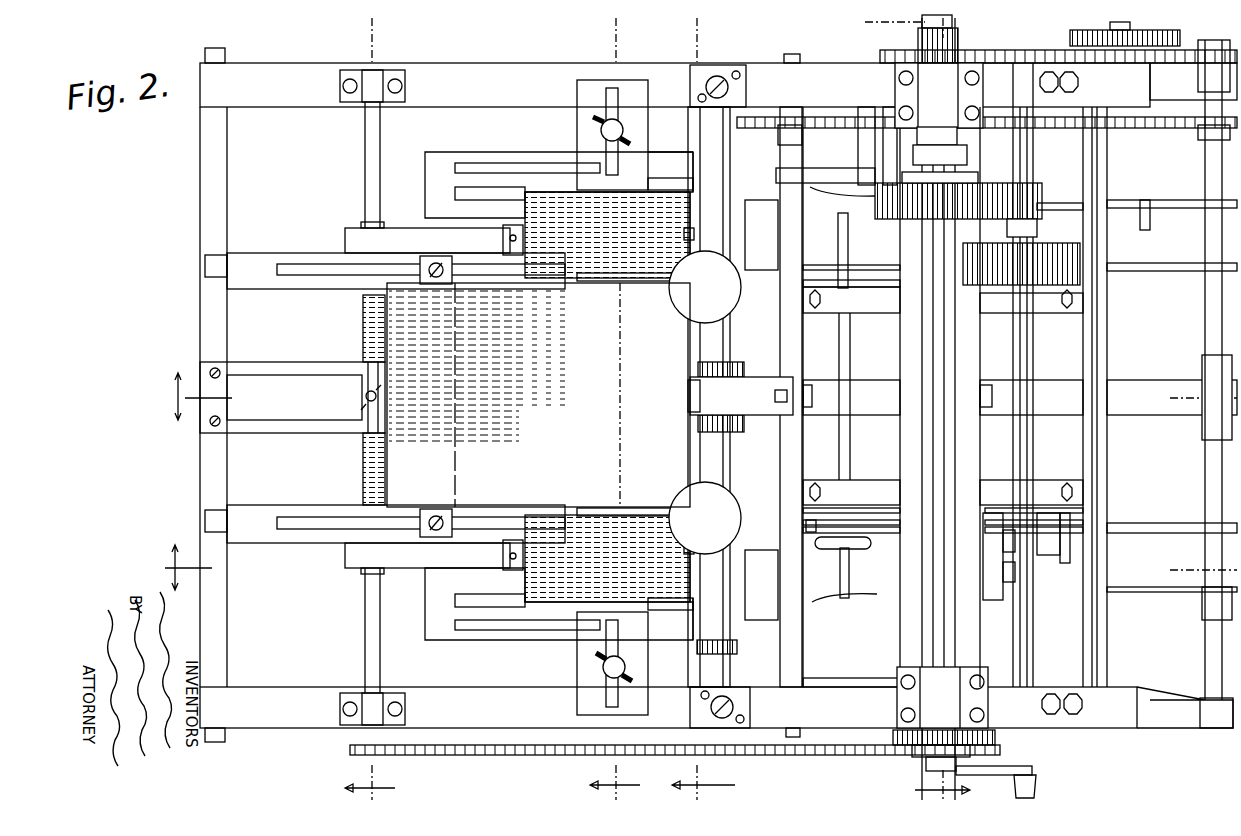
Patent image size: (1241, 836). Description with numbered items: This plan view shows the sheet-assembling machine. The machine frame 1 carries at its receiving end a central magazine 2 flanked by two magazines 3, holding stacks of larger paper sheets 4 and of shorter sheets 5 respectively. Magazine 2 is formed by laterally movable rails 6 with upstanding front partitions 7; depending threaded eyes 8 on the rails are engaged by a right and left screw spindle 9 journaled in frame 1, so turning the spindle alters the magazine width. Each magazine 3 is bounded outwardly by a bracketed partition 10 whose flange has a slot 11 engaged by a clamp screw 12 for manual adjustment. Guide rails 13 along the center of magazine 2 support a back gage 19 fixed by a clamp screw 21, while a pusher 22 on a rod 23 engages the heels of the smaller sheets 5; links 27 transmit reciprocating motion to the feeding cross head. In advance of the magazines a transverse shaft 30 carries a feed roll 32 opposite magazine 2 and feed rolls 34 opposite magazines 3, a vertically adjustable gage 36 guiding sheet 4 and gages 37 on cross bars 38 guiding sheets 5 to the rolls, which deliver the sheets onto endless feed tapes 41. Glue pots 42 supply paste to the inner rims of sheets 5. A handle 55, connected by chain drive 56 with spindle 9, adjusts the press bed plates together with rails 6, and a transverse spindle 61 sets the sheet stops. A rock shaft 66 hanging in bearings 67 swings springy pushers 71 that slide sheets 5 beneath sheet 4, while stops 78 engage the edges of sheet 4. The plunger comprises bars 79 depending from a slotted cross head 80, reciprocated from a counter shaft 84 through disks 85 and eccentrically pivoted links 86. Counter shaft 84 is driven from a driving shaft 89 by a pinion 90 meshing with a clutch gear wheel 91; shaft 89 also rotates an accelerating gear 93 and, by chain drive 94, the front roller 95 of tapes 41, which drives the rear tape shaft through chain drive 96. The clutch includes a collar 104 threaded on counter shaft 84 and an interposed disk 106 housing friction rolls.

The machine frame 1 is at (318, 72).
The central magazine 2 is at (538, 395).
The flanking magazine 3 is at (653, 397).
The larger paper sheet 4 is at (685, 436).
The shorter sheet 5 is at (689, 397).
The laterally movable rail 6 is at (275, 262).
The plate or partition 7 is at (645, 508).
The depending threaded eye 8 is at (615, 412).
The right and left screw spindle 9 is at (362, 483).
The bracketed plate or partition 10 is at (548, 665).
The slot 11 is at (608, 120).
The clamp screw 12 is at (628, 132).
The longitudinal guide rail 13 is at (304, 376).
The back gage 19 is at (366, 378).
The clamp screw 21 is at (366, 394).
The pusher 22 is at (514, 228).
The longitudinally disposed rod 23 is at (398, 232).
The link 27 is at (825, 128).
The transverse shaft 30 is at (732, 464).
The feed roll 32 is at (730, 362).
The feed roll 34 is at (735, 228).
The vertically adjustable gage 36 is at (690, 390).
The vertically adjustable gage 37 is at (686, 232).
The cross bar 38 is at (731, 647).
The endless feed tape 41 is at (862, 215).
The pot 42 is at (705, 402).
The handle 55 is at (1034, 773).
The chain drive 56 is at (842, 757).
The transverse spindle 61 is at (851, 455).
The rock shaft 66 is at (1052, 556).
The bearing 67 is at (1070, 542).
The pusher 71 is at (832, 205).
The stop 78 is at (837, 549).
The bar 79 is at (998, 314).
The slotted cross head 80 is at (922, 630).
The counter shaft 84 is at (950, 472).
The disk 85 is at (918, 48).
The eccentrically pivoted link 86 is at (953, 38).
The driving shaft 89 is at (1033, 368).
The pinion 90 is at (1040, 186).
The clutch gear wheel 91 is at (838, 397).
The accelerating gear 93 is at (1182, 38).
The chain drive 94 is at (1205, 68).
The front roller 95 is at (1205, 160).
The chain drive 96 is at (760, 128).
The collar 104 is at (962, 160).
The disk 106 is at (975, 176).